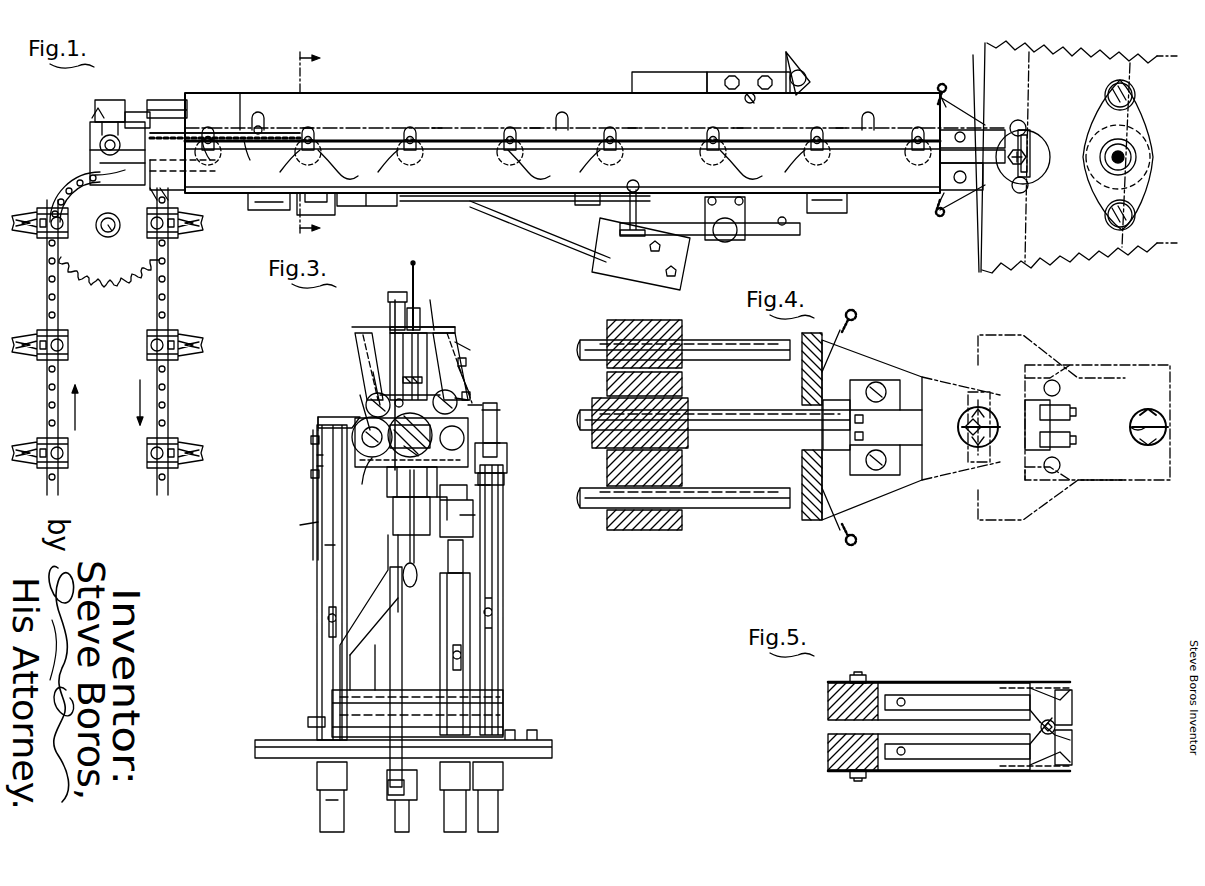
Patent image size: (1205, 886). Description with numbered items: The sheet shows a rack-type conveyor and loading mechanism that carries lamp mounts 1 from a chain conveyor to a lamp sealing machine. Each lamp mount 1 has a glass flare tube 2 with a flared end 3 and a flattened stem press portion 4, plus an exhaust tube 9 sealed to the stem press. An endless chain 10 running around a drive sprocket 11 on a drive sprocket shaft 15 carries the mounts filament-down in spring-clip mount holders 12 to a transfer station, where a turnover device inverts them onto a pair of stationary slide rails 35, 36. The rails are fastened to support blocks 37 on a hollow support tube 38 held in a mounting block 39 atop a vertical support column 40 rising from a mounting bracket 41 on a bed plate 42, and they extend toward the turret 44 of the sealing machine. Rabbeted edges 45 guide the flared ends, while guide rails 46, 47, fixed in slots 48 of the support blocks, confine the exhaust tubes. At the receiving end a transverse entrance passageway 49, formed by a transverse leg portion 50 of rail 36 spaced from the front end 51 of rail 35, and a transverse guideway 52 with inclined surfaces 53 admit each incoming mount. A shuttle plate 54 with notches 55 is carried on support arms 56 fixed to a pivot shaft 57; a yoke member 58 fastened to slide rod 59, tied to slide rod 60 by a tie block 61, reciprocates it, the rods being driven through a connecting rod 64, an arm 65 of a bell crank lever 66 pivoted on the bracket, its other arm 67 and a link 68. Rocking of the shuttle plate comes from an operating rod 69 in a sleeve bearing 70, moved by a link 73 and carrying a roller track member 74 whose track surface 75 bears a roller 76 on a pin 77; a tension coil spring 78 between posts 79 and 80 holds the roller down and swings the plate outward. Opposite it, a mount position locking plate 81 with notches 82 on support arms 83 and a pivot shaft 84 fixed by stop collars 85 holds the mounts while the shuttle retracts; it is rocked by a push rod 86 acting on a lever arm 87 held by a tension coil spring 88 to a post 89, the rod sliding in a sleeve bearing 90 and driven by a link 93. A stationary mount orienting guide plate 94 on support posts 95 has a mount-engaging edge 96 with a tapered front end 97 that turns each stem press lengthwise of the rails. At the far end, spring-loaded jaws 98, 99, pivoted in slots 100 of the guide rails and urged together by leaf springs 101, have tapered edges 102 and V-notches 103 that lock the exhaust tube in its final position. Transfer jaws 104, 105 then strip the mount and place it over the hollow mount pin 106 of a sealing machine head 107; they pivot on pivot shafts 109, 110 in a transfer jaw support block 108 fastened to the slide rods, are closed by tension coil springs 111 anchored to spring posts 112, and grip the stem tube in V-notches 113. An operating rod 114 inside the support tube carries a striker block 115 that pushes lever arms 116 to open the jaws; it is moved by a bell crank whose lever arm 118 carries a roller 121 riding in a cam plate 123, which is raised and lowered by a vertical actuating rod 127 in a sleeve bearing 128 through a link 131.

In FIG. 1, the lamp mount 1 is at (291, 133).
In FIG. 3, the lamp mount 1 is at (433, 304).
In FIG. 4, the lamp mount 1 is at (996, 406).
In FIG. 3, the flare tube 2 is at (420, 308).
In FIG. 4, the flare tube 2 is at (969, 450).
In FIG. 1, the flared end 3 is at (315, 143).
In FIG. 3, the flared end 3 is at (393, 330).
In FIG. 1, the stem press portion 4 is at (212, 160).
In FIG. 3, the stem press portion 4 is at (414, 274).
In FIG. 3, the exhaust tube 9 is at (397, 396).
In FIG. 5, the exhaust tube 9 is at (1055, 726).
In FIG. 1, the endless chain 10 is at (168, 296).
In FIG. 1, the drive sprocket 11 is at (107, 275).
In FIG. 1, the mount holders 12 is at (26, 208).
In FIG. 1, the drive sprocket shaft 15 is at (112, 233).
In FIG. 1, the slide rail 35 is at (134, 111).
In FIG. 3, the slide rail 35 is at (374, 364).
In FIG. 1, the slide rail 36 is at (112, 216).
In FIG. 3, the slide rail 36 is at (474, 352).
In FIG. 1, the support blocks 37 is at (264, 210).
In FIG. 3, the support blocks 37 is at (348, 420).
In FIG. 4, the support blocks 37 is at (658, 530).
In FIG. 3, the support tube 38 is at (390, 478).
In FIG. 4, the support tube 38 is at (692, 448).
In FIG. 3, the mounting block 39 is at (304, 521).
In FIG. 3, the vertical support column 40 is at (394, 528).
In FIG. 1, the mounting bracket 41 is at (675, 72).
In FIG. 3, the mounting bracket 41 is at (346, 620).
In FIG. 3, the bed plate 42 is at (278, 740).
In FIG. 1, the turret 44 is at (984, 54).
In FIG. 1, the rabbeted edges 45 is at (108, 180).
In FIG. 3, the rabbeted edges 45 is at (456, 334).
In FIG. 3, the guide rail 46 is at (374, 392).
In FIG. 5, the guide rail 46 is at (834, 682).
In FIG. 3, the guide rail 47 is at (470, 397).
In FIG. 5, the guide rail 47 is at (834, 770).
In FIG. 3, the slots 48 is at (394, 380).
In FIG. 1, the transverse entrance passageway 49 is at (108, 127).
In FIG. 1, the transverse leg portion 50 is at (90, 128).
In FIG. 1, the front end 51 is at (112, 130).
In FIG. 1, the transverse guideway 52 is at (119, 105).
In FIG. 1, the inclined surfaces 53 is at (95, 110).
In FIG. 1, the shuttle plate 54 is at (444, 202).
In FIG. 3, the shuttle plate 54 is at (434, 336).
In FIG. 1, the notches 55 is at (542, 167).
In FIG. 3, the support arms 56 is at (470, 370).
In FIG. 3, the pivot shaft 57 is at (482, 405).
In FIG. 1, the yoke member 58 is at (316, 208).
In FIG. 3, the yoke member 58 is at (498, 432).
In FIG. 3, the slide rod 59 is at (504, 477).
In FIG. 4, the slide rod 59 is at (754, 509).
In FIG. 1, the slide rod 60 is at (170, 100).
In FIG. 3, the slide rod 60 is at (316, 455).
In FIG. 4, the slide rod 60 is at (752, 328).
In FIG. 1, the tie block 61 is at (366, 204).
In FIG. 3, the tie block 61 is at (316, 466).
In FIG. 3, the connecting rod 64 is at (394, 808).
In FIG. 3, the arm 65 is at (388, 775).
In FIG. 3, the bell crank lever 66 is at (338, 700).
In FIG. 3, the arm 67 is at (340, 647).
In FIG. 3, the link 68 is at (408, 554).
In FIG. 3, the operating rod 69 is at (473, 523).
In FIG. 1, the sleeve bearing 70 is at (734, 240).
In FIG. 3, the sleeve bearing 70 is at (504, 586).
In FIG. 3, the link 73 is at (502, 818).
In FIG. 1, the roller track member 74 is at (764, 235).
In FIG. 3, the roller track member 74 is at (500, 447).
In FIG. 1, the track surface 75 is at (696, 235).
In FIG. 1, the roller 76 is at (614, 254).
In FIG. 3, the roller 76 is at (500, 415).
In FIG. 1, the pin 77 is at (638, 210).
In FIG. 3, the pin 77 is at (465, 405).
In FIG. 3, the tension coil spring 78 is at (466, 360).
In FIG. 3, the post 79 is at (472, 356).
In FIG. 3, the post 80 is at (506, 460).
In FIG. 1, the mount position locking plate 81 is at (447, 93).
In FIG. 3, the mount position locking plate 81 is at (368, 328).
In FIG. 1, the notches 82 is at (210, 134).
In FIG. 3, the support arms 83 is at (368, 370).
In FIG. 3, the pivot shaft 84 is at (368, 404).
In FIG. 3, the stop collars 85 is at (355, 412).
In FIG. 1, the push rod 86 is at (752, 70).
In FIG. 3, the push rod 86 is at (310, 540).
In FIG. 1, the lever arm 87 is at (808, 60).
In FIG. 3, the lever arm 87 is at (318, 422).
In FIG. 1, the tension coil spring 88 is at (785, 54).
In FIG. 3, the tension coil spring 88 is at (312, 490).
In FIG. 3, the post 89 is at (312, 485).
In FIG. 1, the sleeve bearing 90 is at (806, 78).
In FIG. 3, the sleeve bearing 90 is at (317, 578).
In FIG. 3, the link 93 is at (317, 818).
In FIG. 1, the mount orienting guide plate 94 is at (271, 120).
In FIG. 3, the mount orienting guide plate 94 is at (396, 300).
In FIG. 3, the support posts 95 is at (392, 296).
In FIG. 1, the mount-engaging edge 96 is at (247, 152).
In FIG. 1, the tapered front end 97 is at (176, 146).
In FIG. 5, the jaw 98 is at (1073, 692).
In FIG. 5, the jaw 99 is at (1073, 760).
In FIG. 5, the slots 100 is at (884, 684).
In FIG. 5, the leaf springs 101 is at (1001, 682).
In FIG. 5, the tapered edges 102 is at (1028, 696).
In FIG. 5, the V-notches 103 is at (1054, 712).
In FIG. 1, the transfer jaw 104 is at (1020, 148).
In FIG. 4, the transfer jaw 104 is at (951, 363).
In FIG. 1, the transfer jaw 105 is at (989, 182).
In FIG. 4, the transfer jaw 105 is at (956, 520).
In FIG. 1, the hollow mount pin 106 is at (1128, 150).
In FIG. 1, the head 107 is at (1104, 110).
In FIG. 1, the transfer jaw support block 108 is at (960, 100).
In FIG. 4, the transfer jaw support block 108 is at (816, 516).
In FIG. 4, the pivot shaft 109 is at (876, 386).
In FIG. 4, the pivot shaft 110 is at (880, 478).
In FIG. 1, the tension coil springs 111 is at (938, 94).
In FIG. 4, the tension coil springs 111 is at (846, 328).
In FIG. 1, the spring posts 112 is at (940, 86).
In FIG. 4, the spring posts 112 is at (854, 308).
In FIG. 1, the V-notches 113 is at (1024, 126).
In FIG. 4, the V-notches 113 is at (982, 400).
In FIG. 3, the operating rod 114 is at (370, 472).
In FIG. 4, the operating rod 114 is at (770, 410).
In FIG. 4, the striker block 115 is at (826, 454).
In FIG. 4, the lever arms 116 is at (968, 430).
In FIG. 3, the lever arm 118 is at (472, 517).
In FIG. 3, the roller 121 is at (490, 487).
In FIG. 1, the cam plate 123 is at (474, 206).
In FIG. 3, the cam plate 123 is at (462, 503).
In FIG. 3, the vertical actuating rod 127 is at (464, 557).
In FIG. 3, the sleeve bearing 128 is at (470, 677).
In FIG. 3, the link 131 is at (448, 821).